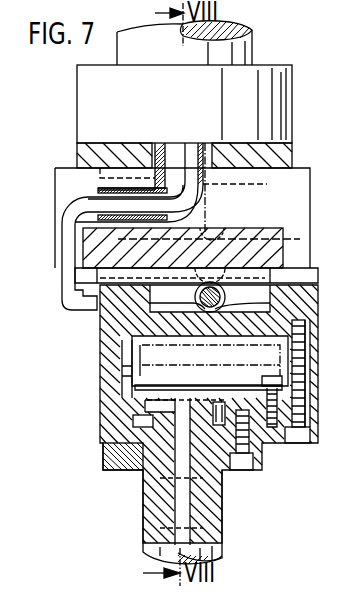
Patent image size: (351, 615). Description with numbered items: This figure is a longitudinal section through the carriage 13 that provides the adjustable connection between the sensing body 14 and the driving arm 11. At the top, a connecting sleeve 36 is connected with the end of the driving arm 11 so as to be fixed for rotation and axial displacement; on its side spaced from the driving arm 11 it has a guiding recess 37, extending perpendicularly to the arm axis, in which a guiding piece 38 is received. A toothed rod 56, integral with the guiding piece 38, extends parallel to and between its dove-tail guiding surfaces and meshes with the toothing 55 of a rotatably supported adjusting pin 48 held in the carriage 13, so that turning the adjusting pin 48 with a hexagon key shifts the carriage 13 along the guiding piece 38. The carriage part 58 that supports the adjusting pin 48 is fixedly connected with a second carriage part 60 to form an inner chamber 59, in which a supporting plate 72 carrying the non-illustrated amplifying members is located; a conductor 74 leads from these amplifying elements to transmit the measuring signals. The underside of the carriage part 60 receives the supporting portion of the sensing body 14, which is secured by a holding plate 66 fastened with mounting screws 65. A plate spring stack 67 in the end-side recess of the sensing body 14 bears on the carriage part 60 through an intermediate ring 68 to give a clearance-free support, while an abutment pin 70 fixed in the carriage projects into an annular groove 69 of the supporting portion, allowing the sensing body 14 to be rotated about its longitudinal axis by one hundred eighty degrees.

The driving arm 11 is at (240, 52).
The connecting sleeve 36 is at (277, 98).
The guiding recess 37 is at (255, 183).
The guiding piece 38 is at (318, 204).
The conductor 74 is at (72, 207).
The toothed rod 56 is at (287, 283).
The toothing 55 is at (195, 297).
The adjusting pin 48 is at (236, 298).
The carriage part 58 is at (308, 350).
The supporting plate 72 is at (157, 387).
The inner chamber 59 is at (250, 375).
The intermediate ring 68 is at (160, 408).
The carriage part 60 is at (307, 403).
The annular groove 69 is at (140, 423).
The holding plate 66 is at (120, 453).
The abutment pin 70 is at (248, 423).
The carriage 13 is at (321, 433).
The plate spring stack 67 is at (167, 438).
The mounting screws 65 is at (243, 462).
The sensing body 14 is at (231, 548).